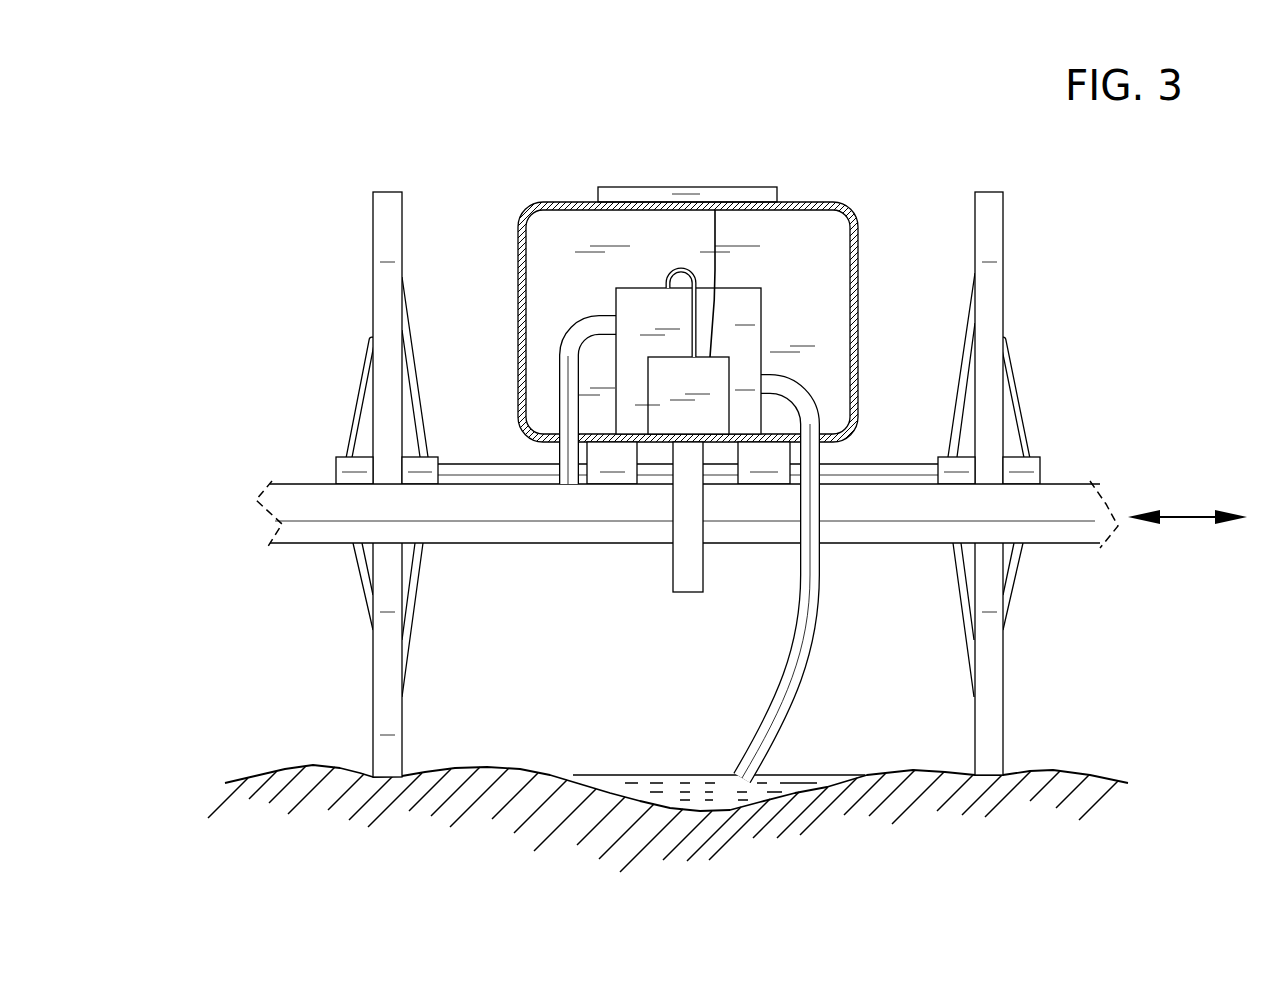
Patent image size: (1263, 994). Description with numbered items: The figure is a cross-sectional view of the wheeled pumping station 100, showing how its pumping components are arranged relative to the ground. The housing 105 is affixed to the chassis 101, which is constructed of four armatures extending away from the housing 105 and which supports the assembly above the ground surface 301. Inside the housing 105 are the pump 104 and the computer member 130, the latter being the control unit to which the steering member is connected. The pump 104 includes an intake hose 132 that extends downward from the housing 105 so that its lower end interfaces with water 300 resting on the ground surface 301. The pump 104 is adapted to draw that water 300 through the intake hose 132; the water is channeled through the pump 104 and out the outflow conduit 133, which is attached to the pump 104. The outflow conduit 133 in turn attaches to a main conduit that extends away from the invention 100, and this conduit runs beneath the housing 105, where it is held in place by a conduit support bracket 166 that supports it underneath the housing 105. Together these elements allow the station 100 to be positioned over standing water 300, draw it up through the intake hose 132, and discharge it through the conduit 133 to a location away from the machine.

The wheeled pumping station 100 is at (340, 101).
The chassis 101 is at (608, 455).
The pump 104 is at (761, 318).
The housing 105 is at (811, 203).
The computer member 130 is at (713, 372).
The intake hose 132 is at (817, 605).
The outflow conduit 133 is at (553, 343).
The conduit support bracket 166 is at (683, 569).
The water 300 is at (648, 775).
The ground surface 301 is at (498, 768).